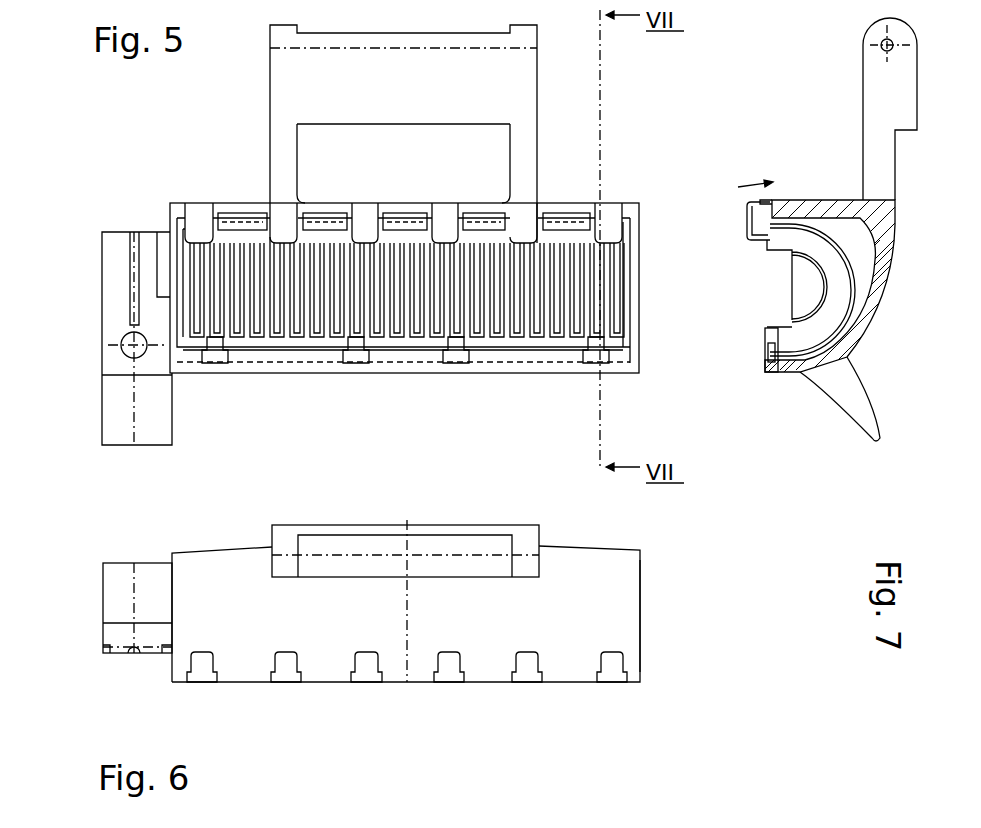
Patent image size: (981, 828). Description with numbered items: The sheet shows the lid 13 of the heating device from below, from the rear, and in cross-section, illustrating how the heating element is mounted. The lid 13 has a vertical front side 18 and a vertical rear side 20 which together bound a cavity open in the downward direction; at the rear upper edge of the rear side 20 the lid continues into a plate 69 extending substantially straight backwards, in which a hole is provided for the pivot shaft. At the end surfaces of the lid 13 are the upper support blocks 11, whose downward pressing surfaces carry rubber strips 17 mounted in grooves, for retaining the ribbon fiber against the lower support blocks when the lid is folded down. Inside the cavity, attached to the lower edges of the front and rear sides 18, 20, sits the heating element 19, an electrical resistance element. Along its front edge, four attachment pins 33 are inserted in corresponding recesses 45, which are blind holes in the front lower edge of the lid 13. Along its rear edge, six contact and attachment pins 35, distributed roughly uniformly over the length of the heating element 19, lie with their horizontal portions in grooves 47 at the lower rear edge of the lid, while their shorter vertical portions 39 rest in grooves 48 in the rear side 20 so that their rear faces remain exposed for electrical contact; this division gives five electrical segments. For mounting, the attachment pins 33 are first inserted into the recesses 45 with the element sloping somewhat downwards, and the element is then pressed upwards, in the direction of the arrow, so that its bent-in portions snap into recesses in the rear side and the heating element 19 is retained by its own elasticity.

In FIG. 5, the upper support blocks 11 is at (113, 327).
In FIG. 6, the upper support blocks 11 is at (137, 608).
In FIG. 5, the lid 13 is at (616, 118).
In FIG. 6, the lid 13 is at (670, 564).
In FIG. 7, the lid 13 is at (886, 250).
In FIG. 5, the rubber strips 17 is at (133, 238).
In FIG. 7, the front side 18 is at (799, 363).
In FIG. 5, the heating element 19 is at (620, 289).
In FIG. 7, the heating element 19 is at (821, 287).
In FIG. 6, the rear side 20 is at (634, 620).
In FIG. 7, the rear side 20 is at (822, 205).
In FIG. 5, the attachment pins 33 is at (216, 342).
In FIG. 7, the attachment pins 33 is at (765, 335).
In FIG. 5, the contact and attachment pins 35 is at (199, 216).
In FIG. 6, the vertical portion 39 is at (202, 730).
In FIG. 7, the recesses 45 is at (765, 355).
In FIG. 7, the grooves 47 is at (766, 212).
In FIG. 7, the grooves 48 is at (787, 207).
In FIG. 5, the plate 69 is at (281, 107).
In FIG. 6, the plate 69 is at (530, 537).